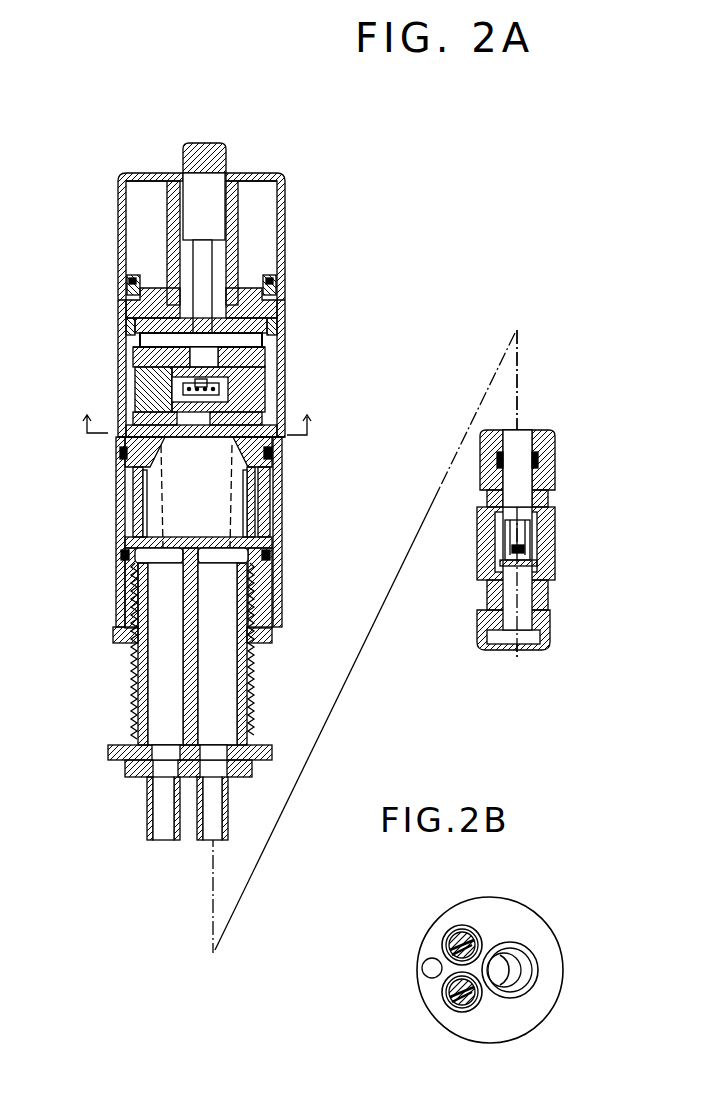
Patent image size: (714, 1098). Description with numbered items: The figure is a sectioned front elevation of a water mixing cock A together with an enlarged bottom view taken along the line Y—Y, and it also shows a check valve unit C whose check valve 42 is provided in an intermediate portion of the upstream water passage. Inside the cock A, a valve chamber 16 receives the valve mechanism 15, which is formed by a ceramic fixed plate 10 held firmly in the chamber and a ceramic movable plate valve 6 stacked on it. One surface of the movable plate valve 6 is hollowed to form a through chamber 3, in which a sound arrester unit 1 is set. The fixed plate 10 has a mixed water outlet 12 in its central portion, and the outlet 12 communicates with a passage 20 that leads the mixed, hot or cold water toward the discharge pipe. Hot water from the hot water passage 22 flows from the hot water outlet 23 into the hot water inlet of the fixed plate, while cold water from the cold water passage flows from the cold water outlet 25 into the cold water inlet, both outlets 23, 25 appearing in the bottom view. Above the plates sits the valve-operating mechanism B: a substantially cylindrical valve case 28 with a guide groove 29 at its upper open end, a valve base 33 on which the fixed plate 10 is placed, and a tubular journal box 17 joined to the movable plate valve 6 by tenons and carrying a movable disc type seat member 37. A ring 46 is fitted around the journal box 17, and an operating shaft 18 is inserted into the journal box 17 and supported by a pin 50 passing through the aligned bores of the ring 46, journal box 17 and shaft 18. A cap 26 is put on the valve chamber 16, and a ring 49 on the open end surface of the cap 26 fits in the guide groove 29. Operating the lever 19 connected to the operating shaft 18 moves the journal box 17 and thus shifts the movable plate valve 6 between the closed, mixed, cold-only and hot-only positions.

In FIG. 2A, the sound arrester unit 1 is at (283, 300).
In FIG. 2A, the through chamber 3 is at (120, 383).
In FIG. 2A, the movable plate valve 6 is at (283, 343).
In FIG. 2A, the fixed plate 10 is at (267, 405).
In FIG. 2A, the mixed water outlet 12 is at (120, 405).
In FIG. 2B, the mixed water outlet 12 is at (500, 987).
In FIG. 2A, the valve mechanism 15 is at (120, 364).
In FIG. 2A, the valve chamber 16 is at (262, 379).
In FIG. 2A, the journal box 17 is at (120, 273).
In FIG. 2A, the operating shaft 18 is at (207, 265).
In FIG. 2A, the lever 19 is at (210, 188).
In FIG. 2A, the passage 20 is at (262, 518).
In FIG. 2A, the hot water passage 22 is at (135, 605).
In FIG. 2A, the hot water outlet 23 is at (130, 473).
In FIG. 2B, the hot water outlet 23 is at (452, 928).
In FIG. 2A, the cold water outlet 25 is at (252, 445).
In FIG. 2B, the cold water outlet 25 is at (450, 1008).
In FIG. 2A, the cap 26 is at (277, 178).
In FIG. 2A, the valve case 28 is at (120, 322).
In FIG. 2A, the guide groove 29 is at (120, 297).
In FIG. 2A, the valve base 33 is at (118, 437).
In FIG. 2B, the valve base 33 is at (513, 900).
In FIG. 2A, the movable disc type seat member 37 is at (283, 322).
In FIG. 2A, the check valve 42 is at (550, 558).
In FIG. 2A, the ring 46 is at (120, 344).
In FIG. 2A, the ring 49 is at (222, 290).
In FIG. 2A, the pin 50 is at (247, 288).
In FIG. 2A, the water mixing cock A is at (145, 167).
In FIG. 2A, the valve-operating mechanism B is at (283, 360).
In FIG. 2A, the check valve unit C is at (520, 512).
In FIG. 2A, the line Y— Y is at (193, 440).